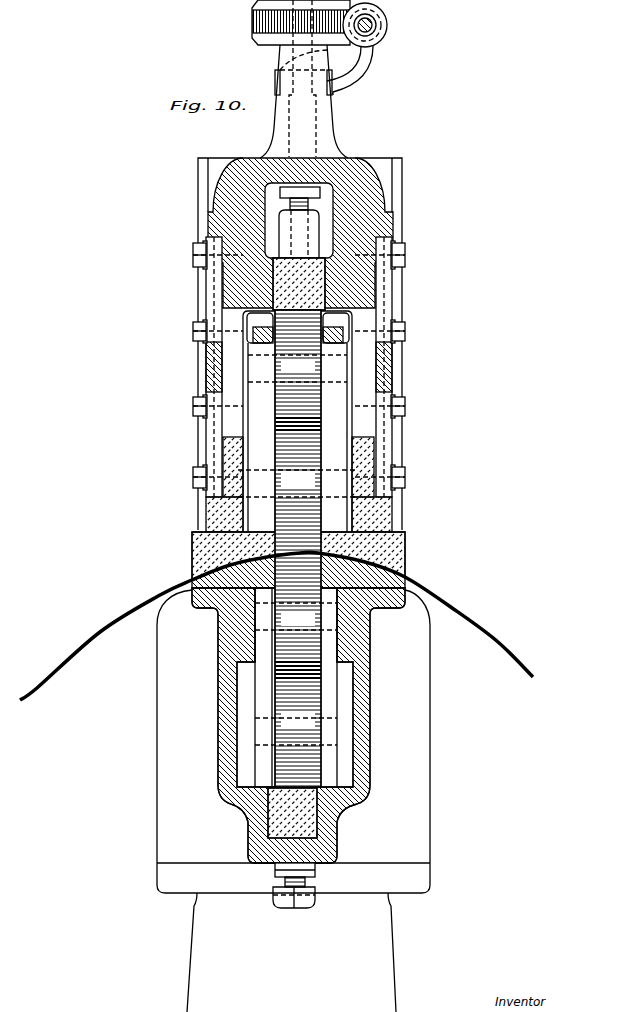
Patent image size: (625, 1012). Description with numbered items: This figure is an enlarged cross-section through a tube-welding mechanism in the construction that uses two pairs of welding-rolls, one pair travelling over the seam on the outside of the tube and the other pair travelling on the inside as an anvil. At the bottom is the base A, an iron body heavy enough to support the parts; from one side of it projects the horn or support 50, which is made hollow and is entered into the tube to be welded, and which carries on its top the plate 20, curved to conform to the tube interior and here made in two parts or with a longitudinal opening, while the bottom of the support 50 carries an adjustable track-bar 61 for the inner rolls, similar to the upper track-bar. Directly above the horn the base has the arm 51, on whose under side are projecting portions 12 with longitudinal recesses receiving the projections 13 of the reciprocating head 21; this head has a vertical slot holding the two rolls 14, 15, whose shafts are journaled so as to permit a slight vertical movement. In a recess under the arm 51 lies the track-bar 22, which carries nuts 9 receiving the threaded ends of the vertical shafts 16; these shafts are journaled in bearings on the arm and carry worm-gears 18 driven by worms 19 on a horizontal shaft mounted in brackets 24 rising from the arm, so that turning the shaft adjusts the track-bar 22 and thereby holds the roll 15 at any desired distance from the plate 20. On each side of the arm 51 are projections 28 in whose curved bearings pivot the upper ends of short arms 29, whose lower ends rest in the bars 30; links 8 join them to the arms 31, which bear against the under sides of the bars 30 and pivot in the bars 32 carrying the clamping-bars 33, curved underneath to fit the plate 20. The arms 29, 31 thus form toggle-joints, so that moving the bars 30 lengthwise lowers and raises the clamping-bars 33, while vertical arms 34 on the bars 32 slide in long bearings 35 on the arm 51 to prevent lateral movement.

The worm-gear 18 is at (253, 22).
The worm 19 is at (388, 25).
The bracket 24 is at (316, 79).
The arm 51 is at (254, 158).
The long bearing 35 is at (300, 344).
The nut 9 is at (299, 220).
The vertical shaft 16 is at (308, 204).
The track-bar 22 is at (299, 277).
The link 8 is at (206, 368).
The projection 28 is at (208, 231).
The short arm 29 is at (214, 295).
The bar 30 is at (210, 384).
The arm 31 is at (214, 437).
The projection 13 is at (297, 421).
The projecting portion 12 is at (297, 437).
The roll 14 is at (297, 548).
The roll 15 is at (298, 550).
The reciprocating head 21 is at (298, 590).
The vertical arm 34 is at (298, 460).
The bar 32 is at (206, 503).
The clamping-bar 33 is at (192, 546).
The plate 20 is at (192, 568).
The horn or support 50 is at (218, 633).
The adjustable track-bar 61 is at (300, 815).
The base A is at (276, 782).